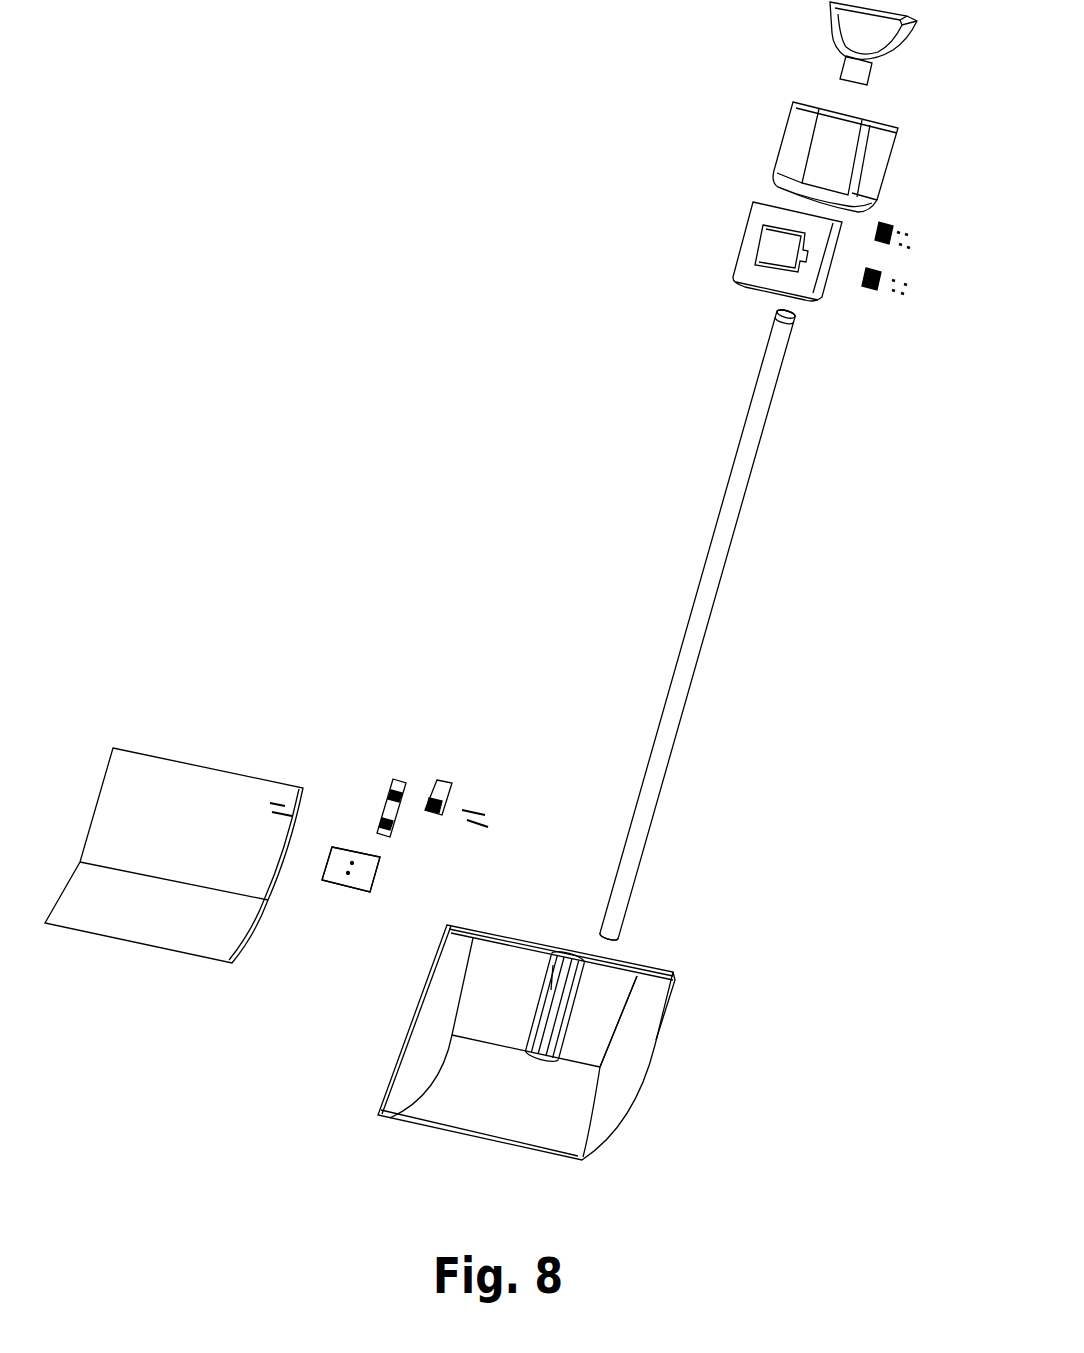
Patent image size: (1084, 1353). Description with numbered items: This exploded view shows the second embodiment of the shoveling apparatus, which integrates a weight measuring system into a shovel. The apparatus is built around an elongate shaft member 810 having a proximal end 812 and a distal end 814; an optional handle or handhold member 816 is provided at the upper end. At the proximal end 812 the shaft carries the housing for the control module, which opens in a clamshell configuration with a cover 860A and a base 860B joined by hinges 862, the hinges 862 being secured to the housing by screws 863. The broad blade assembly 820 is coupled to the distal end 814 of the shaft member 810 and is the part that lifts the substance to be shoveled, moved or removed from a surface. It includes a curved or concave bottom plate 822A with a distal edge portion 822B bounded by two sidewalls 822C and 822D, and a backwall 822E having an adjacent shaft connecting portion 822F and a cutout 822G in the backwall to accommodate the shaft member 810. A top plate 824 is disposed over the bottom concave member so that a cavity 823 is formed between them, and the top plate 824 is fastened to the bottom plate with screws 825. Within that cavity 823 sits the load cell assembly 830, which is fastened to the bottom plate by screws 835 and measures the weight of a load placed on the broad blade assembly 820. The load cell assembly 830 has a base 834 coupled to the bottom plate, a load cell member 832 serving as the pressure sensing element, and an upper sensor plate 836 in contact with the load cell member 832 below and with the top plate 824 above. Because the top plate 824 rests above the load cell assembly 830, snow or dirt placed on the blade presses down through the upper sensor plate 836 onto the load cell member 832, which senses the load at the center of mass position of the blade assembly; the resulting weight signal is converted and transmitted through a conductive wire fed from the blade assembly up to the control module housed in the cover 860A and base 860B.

The elongate shaft member 810 is at (740, 487).
The proximal end 812 is at (766, 308).
The distal end 814 is at (593, 927).
The handle or handhold member 816 is at (829, 30).
The broad blade assembly 820 is at (646, 1068).
The curved or concave bottom plate 822A is at (490, 1004).
The distal edge portion 822B is at (553, 1165).
The sidewall 822C is at (407, 1086).
The sidewall 822D is at (610, 1118).
The backwall 822E is at (623, 961).
The shaft connecting portion 822F is at (566, 950).
The cutout 822G is at (540, 946).
The cavity 823 is at (590, 1021).
The top plate 824 is at (118, 942).
The screws 825 is at (262, 807).
The load cell assembly 830 is at (413, 862).
The load cell member 832 is at (400, 779).
The base 834 is at (446, 779).
The screws 835 is at (477, 806).
The upper sensor plate 836 is at (338, 887).
The cover 860A is at (753, 205).
The base 860B is at (786, 133).
The hinges 862 is at (877, 232).
The screws 863 is at (915, 240).